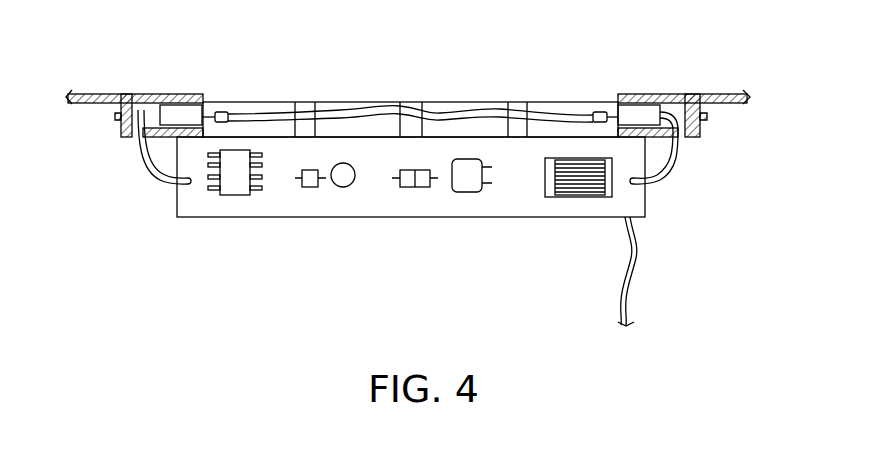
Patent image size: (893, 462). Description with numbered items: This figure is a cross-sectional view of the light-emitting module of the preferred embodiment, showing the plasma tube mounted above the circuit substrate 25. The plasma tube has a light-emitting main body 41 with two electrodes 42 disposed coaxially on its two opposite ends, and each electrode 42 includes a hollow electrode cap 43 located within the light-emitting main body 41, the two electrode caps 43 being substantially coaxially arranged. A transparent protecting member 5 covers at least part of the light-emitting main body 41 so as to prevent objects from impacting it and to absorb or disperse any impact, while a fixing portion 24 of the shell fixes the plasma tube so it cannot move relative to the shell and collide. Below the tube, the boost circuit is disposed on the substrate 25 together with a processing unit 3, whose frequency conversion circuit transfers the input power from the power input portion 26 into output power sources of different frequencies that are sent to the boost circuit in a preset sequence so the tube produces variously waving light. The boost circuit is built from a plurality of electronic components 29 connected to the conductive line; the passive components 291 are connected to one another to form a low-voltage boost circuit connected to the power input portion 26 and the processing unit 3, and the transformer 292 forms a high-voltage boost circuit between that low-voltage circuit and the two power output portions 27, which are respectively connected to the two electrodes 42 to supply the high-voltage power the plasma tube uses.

The processing unit 3 is at (237, 183).
The protecting member 5 is at (513, 100).
The fixing portion 24 is at (125, 133).
The substrate 25 is at (198, 210).
The power input portion 26 is at (627, 282).
The power output portion 27 is at (670, 178).
The electronic components 29 is at (406, 223).
The light-emitting main body 41 is at (254, 103).
The electrode 42 is at (178, 113).
The electrode cap 43 is at (598, 110).
The passive components 291 is at (407, 177).
The transformer 292 is at (577, 185).